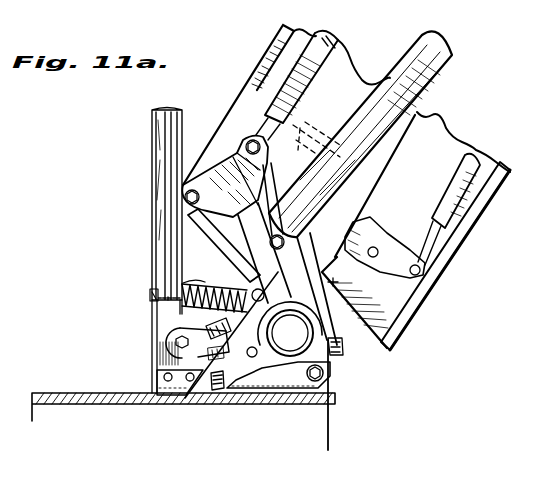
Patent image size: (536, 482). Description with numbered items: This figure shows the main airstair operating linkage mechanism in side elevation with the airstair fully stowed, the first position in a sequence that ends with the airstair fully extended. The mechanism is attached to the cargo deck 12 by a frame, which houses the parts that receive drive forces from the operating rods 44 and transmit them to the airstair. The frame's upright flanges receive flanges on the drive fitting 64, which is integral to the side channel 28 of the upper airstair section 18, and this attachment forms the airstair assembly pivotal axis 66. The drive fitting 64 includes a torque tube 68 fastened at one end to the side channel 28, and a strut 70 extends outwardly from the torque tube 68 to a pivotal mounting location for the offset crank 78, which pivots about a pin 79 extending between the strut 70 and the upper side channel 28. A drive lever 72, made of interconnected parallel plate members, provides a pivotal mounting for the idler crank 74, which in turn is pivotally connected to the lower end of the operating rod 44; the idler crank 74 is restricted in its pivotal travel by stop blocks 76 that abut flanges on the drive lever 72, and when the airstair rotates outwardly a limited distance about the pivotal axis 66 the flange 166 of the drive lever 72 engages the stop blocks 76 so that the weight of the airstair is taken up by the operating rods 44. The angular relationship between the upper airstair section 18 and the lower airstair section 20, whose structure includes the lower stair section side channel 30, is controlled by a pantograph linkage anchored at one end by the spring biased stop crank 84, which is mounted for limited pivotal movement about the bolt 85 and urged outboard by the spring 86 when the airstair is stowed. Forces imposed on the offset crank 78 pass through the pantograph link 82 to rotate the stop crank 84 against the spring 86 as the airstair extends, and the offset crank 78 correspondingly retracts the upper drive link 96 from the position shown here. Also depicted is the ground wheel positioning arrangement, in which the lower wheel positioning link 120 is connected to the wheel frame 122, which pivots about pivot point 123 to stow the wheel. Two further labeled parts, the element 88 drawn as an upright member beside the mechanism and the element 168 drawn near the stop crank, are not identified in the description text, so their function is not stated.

The cargo deck 12 is at (57, 392).
The upper airstair section 18 is at (216, 118).
The lower airstair section 20 is at (458, 252).
The side channel 28 is at (262, 80).
The lower stair section side channel 30 is at (407, 296).
The operating rods 44 is at (423, 52).
The drive fitting 64 is at (336, 373).
The airstair assembly pivotal axis 66 is at (332, 405).
The torque tube 68 is at (337, 346).
The strut 70 is at (338, 283).
The drive lever 72 is at (257, 392).
The idler crank 74 is at (172, 337).
The stop blocks 76 is at (200, 367).
The offset crank 78 is at (213, 168).
The pin 79 is at (297, 243).
The pantograph link 82 is at (212, 219).
The stop crank 84 is at (232, 313).
The bolt 85 is at (186, 399).
The spring 86 is at (190, 280).
The post 88 is at (160, 132).
The upper drive link 96 is at (312, 40).
The lower wheel positioning link 120 is at (478, 160).
The wheel frame 122 is at (373, 250).
The pivot point 123 is at (322, 270).
The flange 166 is at (224, 394).
The pawl block 168 is at (226, 326).